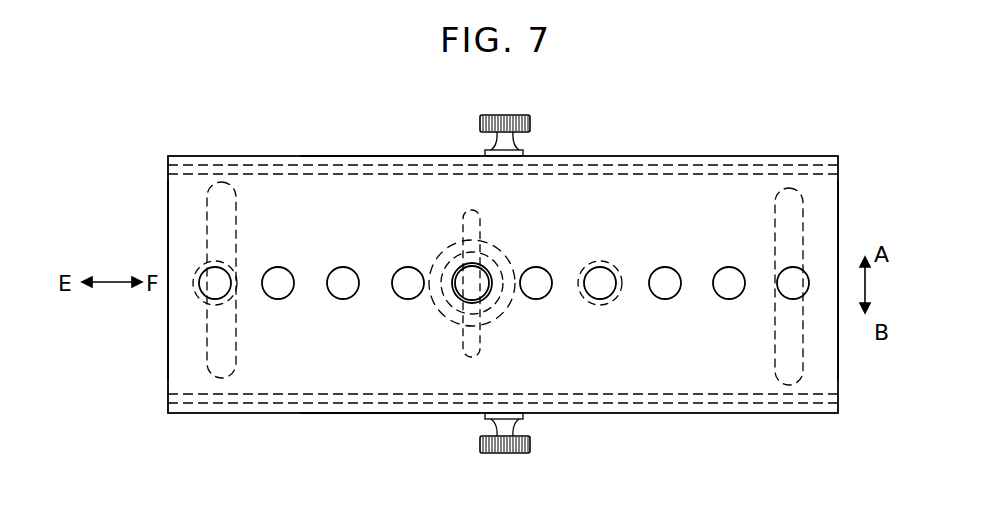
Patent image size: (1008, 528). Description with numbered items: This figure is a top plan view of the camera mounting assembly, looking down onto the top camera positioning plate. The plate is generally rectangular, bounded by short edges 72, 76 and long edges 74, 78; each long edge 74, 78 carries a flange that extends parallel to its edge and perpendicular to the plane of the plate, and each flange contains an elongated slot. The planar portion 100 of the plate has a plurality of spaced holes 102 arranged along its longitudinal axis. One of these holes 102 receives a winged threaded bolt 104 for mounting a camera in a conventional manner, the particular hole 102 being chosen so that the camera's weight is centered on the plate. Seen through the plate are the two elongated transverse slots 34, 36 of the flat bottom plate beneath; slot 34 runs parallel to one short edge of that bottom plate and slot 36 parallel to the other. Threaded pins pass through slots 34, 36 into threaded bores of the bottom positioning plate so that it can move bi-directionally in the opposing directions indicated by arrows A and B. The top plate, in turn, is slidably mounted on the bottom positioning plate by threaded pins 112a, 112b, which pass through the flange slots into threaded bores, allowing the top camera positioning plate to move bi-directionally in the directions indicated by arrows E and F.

The planar portion 100 is at (637, 193).
The short edge 72 is at (840, 222).
The long edge 74 is at (390, 156).
The short edge 76 is at (168, 323).
The long edge 78 is at (385, 418).
The elongated transverse slot 34 is at (236, 218).
The elongated transverse slot 36 is at (775, 228).
The spaced holes 102 is at (653, 296).
The winged threaded bolt 104 is at (482, 225).
The threaded pin 112a is at (505, 118).
The threaded pin 112b is at (497, 453).